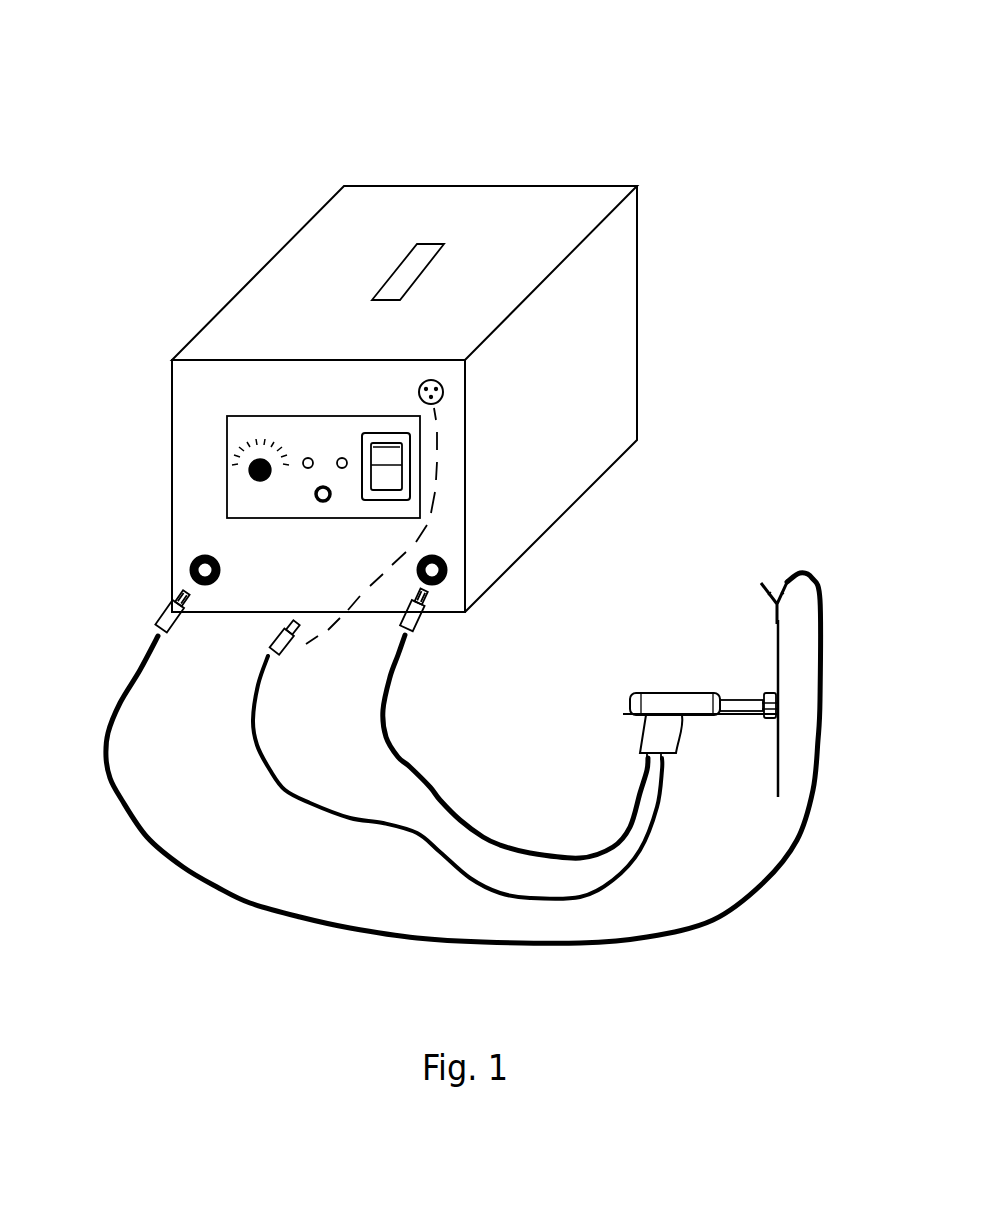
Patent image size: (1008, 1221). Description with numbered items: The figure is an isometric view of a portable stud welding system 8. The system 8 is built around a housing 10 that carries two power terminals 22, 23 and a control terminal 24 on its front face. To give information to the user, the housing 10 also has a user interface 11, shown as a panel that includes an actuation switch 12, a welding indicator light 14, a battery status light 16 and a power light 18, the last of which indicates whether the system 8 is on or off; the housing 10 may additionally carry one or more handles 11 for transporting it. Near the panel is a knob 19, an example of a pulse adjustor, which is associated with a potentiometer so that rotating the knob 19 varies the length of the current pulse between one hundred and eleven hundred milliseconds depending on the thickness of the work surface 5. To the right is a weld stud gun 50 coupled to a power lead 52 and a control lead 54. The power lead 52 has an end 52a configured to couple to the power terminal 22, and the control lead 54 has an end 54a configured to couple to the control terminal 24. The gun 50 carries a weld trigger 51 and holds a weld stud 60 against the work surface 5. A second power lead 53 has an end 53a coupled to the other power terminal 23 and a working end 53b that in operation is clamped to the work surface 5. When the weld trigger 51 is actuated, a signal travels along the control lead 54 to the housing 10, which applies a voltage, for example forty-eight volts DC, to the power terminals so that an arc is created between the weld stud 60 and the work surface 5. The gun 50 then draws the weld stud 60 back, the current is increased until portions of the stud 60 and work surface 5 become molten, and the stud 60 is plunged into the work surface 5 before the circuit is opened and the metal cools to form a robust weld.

The work surface 5 is at (775, 667).
The portable stud welding system 8 is at (493, 104).
The housing 10 is at (527, 186).
The user interface 11 is at (405, 258).
The actuation switch 12 is at (398, 460).
The welding indicator light 14 is at (253, 472).
The battery status light 16 is at (298, 462).
The power light 18 is at (333, 462).
The knob 19 is at (323, 503).
The power terminal 22 is at (447, 570).
The power terminal 23 is at (192, 568).
The control terminal 24 is at (445, 387).
The weld stud gun 50 is at (630, 700).
The weld trigger 51 is at (686, 728).
The power lead 52 is at (463, 822).
The end 52a is at (420, 635).
The second power lead 53 is at (218, 886).
The end 53a is at (172, 605).
The working end 53b is at (770, 613).
The control lead 54 is at (268, 780).
The end 54a is at (265, 640).
The weld stud 60 is at (771, 692).